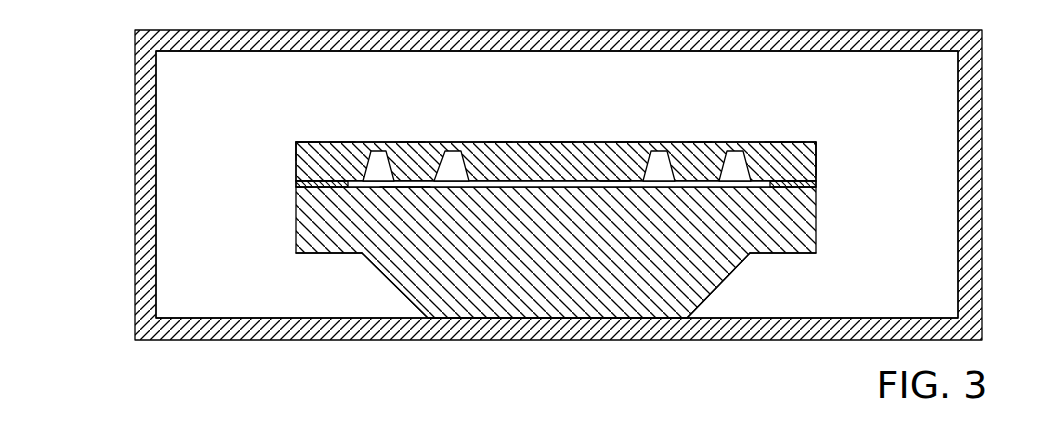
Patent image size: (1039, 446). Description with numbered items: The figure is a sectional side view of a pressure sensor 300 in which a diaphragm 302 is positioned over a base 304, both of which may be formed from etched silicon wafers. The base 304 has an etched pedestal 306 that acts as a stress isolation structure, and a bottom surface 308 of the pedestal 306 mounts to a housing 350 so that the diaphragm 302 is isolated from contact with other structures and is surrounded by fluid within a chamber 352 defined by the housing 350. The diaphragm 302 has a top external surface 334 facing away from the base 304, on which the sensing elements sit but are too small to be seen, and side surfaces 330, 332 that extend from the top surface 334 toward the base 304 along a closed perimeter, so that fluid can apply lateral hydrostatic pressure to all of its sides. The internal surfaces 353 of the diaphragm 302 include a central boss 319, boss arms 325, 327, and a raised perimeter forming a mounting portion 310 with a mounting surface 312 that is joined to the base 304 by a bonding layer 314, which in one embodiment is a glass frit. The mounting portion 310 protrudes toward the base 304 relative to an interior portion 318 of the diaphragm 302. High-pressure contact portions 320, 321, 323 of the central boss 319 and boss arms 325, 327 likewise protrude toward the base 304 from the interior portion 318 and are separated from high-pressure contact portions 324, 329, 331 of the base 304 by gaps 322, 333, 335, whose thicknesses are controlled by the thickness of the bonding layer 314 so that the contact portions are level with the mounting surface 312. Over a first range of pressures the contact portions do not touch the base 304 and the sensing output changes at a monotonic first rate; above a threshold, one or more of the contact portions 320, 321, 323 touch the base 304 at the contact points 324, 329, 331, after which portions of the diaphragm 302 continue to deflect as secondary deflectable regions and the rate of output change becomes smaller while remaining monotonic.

The pressure sensor 300 is at (840, 131).
The diaphragm 302 is at (296, 170).
The base 304 is at (295, 246).
The pedestal 306 is at (392, 287).
The bottom surface 308 is at (472, 318).
The mounting portion 310 is at (343, 152).
The mounting surface 312 is at (308, 160).
The bonding layer 314 is at (296, 183).
The interior portion 318 is at (378, 152).
The central boss 319 is at (500, 152).
The high-pressure contact portion 320 is at (535, 152).
The high-pressure contact portion 321 is at (434, 180).
The gap 322 is at (614, 181).
The high-pressure contact portion 323 is at (700, 160).
The high-pressure contact portion 324 is at (562, 150).
The boss arm 325 is at (411, 156).
The boss arm 327 is at (682, 150).
The high-pressure contact portion 329 is at (408, 186).
The side surface 330 is at (296, 150).
The high-pressure contact portion 331 is at (711, 289).
The side surface 332 is at (816, 165).
The gap 333 is at (361, 255).
The top external surface 334 is at (628, 146).
The gap 335 is at (750, 253).
The housing 350 is at (140, 335).
The chamber 352 is at (170, 279).
The internal surfaces 353 is at (733, 152).